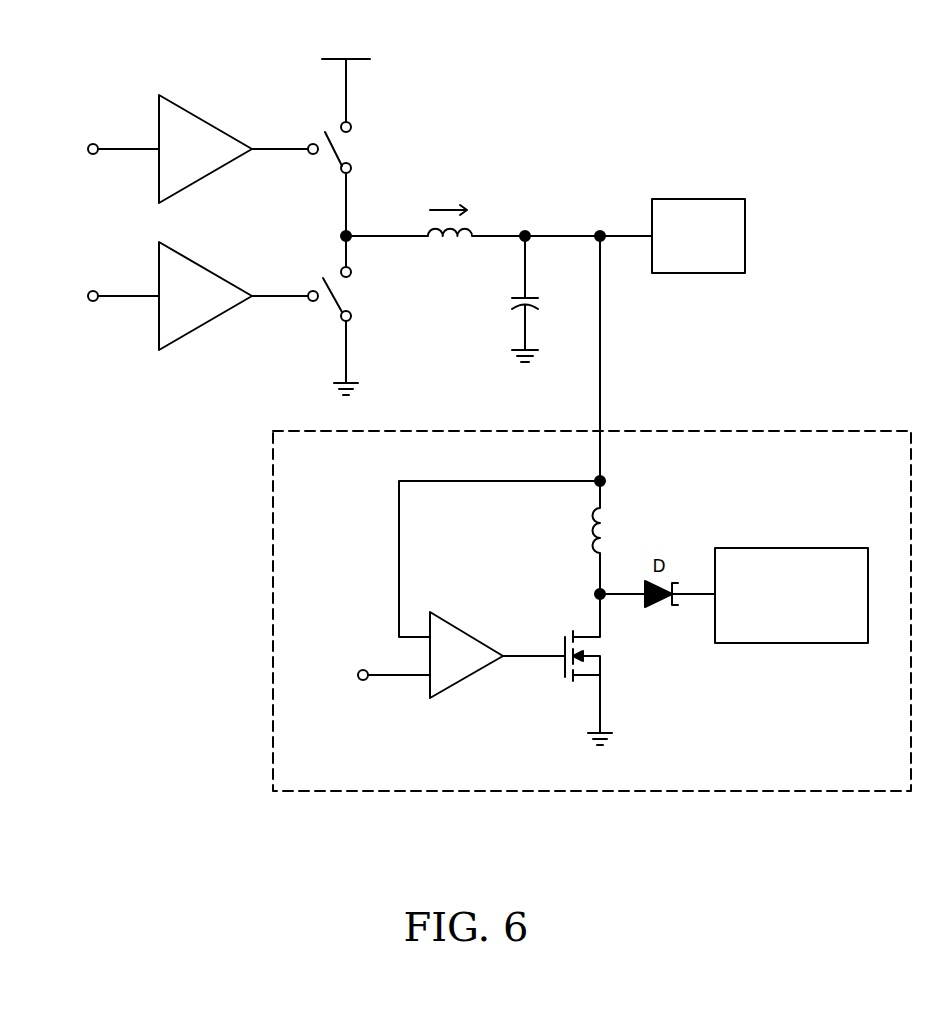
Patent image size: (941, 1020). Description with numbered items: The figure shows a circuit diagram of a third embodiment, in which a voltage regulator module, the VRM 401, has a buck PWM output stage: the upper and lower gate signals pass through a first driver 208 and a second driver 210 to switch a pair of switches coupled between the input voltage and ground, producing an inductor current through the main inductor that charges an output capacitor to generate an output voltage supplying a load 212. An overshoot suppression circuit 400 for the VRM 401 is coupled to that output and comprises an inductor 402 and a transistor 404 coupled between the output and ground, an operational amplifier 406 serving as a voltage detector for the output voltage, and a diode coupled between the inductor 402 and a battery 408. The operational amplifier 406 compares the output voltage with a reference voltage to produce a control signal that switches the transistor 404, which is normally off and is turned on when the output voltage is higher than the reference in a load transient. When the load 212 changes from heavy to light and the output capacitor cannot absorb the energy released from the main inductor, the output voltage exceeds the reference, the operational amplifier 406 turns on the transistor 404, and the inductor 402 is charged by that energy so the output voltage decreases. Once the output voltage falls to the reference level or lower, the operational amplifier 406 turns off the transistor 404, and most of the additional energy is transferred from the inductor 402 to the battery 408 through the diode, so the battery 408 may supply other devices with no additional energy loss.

The driver 208 is at (204, 122).
The driver 210 is at (204, 269).
The load 212 is at (697, 199).
The overshoot suppression circuit 400 is at (272, 558).
The VRM 401 is at (846, 131).
The inductor 402 is at (622, 527).
The transistor 404 is at (614, 660).
The operational amplifier 406 is at (468, 675).
The battery 408 is at (790, 548).